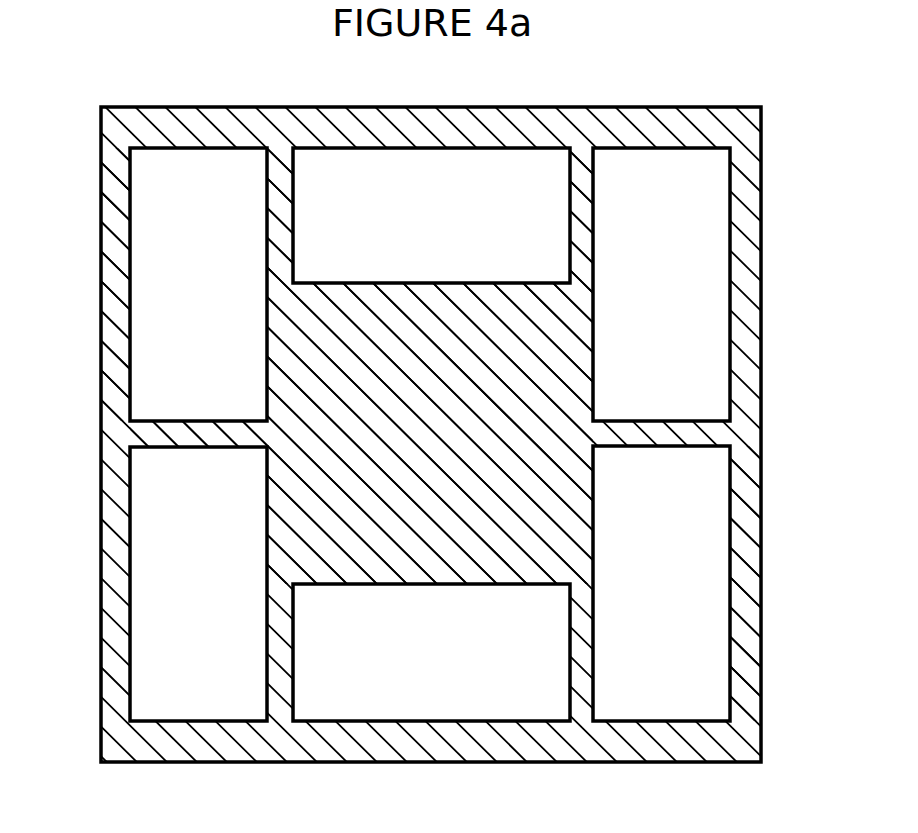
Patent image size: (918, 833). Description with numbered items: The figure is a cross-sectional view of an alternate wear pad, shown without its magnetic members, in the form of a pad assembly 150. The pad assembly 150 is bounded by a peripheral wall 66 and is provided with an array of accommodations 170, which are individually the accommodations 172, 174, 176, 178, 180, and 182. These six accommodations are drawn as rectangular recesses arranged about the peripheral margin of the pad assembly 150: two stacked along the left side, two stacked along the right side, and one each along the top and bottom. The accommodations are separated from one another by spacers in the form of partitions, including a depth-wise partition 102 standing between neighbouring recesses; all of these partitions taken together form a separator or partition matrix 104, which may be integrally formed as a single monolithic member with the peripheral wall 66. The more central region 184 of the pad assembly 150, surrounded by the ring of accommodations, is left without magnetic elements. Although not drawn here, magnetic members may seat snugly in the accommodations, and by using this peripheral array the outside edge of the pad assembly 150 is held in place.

The pad assembly 150 is at (293, 107).
The depth-wise partition 102 is at (278, 207).
The array of accommodations 170 is at (150, 198).
The accommodation 172 is at (146, 260).
The partition matrix 104 is at (179, 428).
The central region 184 is at (290, 487).
The accommodation 182 is at (145, 562).
The accommodation 174 is at (439, 182).
The accommodation 180 is at (412, 688).
The accommodation 176 is at (690, 192).
The accommodation 178 is at (703, 532).
The peripheral wall 66 is at (745, 609).